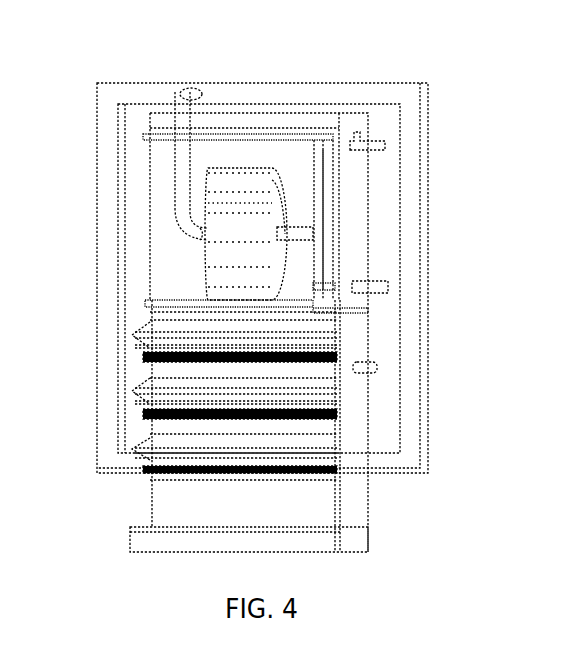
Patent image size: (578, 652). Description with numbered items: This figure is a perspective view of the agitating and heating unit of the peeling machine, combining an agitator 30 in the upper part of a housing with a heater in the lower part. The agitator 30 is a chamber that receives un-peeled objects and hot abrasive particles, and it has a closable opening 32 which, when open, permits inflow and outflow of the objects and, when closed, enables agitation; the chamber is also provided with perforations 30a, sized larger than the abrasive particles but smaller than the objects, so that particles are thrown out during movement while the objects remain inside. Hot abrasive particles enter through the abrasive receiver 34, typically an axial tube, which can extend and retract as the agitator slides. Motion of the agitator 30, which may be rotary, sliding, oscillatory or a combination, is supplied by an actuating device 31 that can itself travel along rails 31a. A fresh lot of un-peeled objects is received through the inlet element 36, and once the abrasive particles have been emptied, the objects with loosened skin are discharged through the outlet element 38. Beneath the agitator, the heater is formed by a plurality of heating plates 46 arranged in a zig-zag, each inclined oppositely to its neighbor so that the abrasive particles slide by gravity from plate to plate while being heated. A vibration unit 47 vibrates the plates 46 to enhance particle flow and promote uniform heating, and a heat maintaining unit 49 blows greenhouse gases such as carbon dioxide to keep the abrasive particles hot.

The agitator 30 is at (266, 168).
The perforations 30a is at (215, 244).
The actuating device 31 is at (311, 235).
The rails 31a is at (333, 178).
The closable opening 32 is at (276, 202).
The abrasive receiver 34 is at (181, 97).
The inlet element 36 is at (390, 146).
The outlet element 38 is at (392, 286).
The heating plates 46 is at (150, 452).
The vibration unit 47 is at (175, 508).
The heat maintaining unit 49 is at (380, 369).